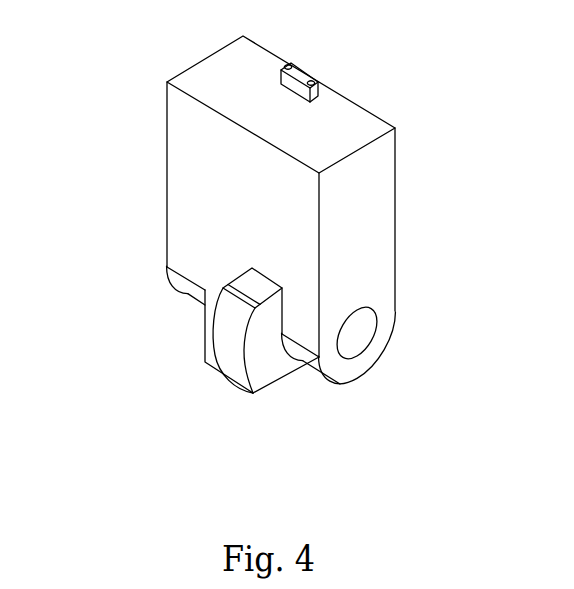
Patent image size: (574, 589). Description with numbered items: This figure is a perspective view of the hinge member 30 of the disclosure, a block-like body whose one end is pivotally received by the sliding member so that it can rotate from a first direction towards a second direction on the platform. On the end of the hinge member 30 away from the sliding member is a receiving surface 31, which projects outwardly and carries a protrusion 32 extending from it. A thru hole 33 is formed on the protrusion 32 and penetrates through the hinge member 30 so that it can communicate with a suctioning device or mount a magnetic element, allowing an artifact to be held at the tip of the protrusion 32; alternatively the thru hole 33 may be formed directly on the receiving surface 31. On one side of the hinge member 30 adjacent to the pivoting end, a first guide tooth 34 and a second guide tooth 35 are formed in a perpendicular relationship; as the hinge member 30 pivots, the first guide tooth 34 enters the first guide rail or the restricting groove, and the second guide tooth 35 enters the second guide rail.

The hinge member 30 is at (187, 185).
The receiving surface 31 is at (358, 118).
The protrusion 32 is at (313, 93).
The thru hole 33 is at (291, 65).
The first guide tooth 34 is at (208, 322).
The second guide tooth 35 is at (236, 352).